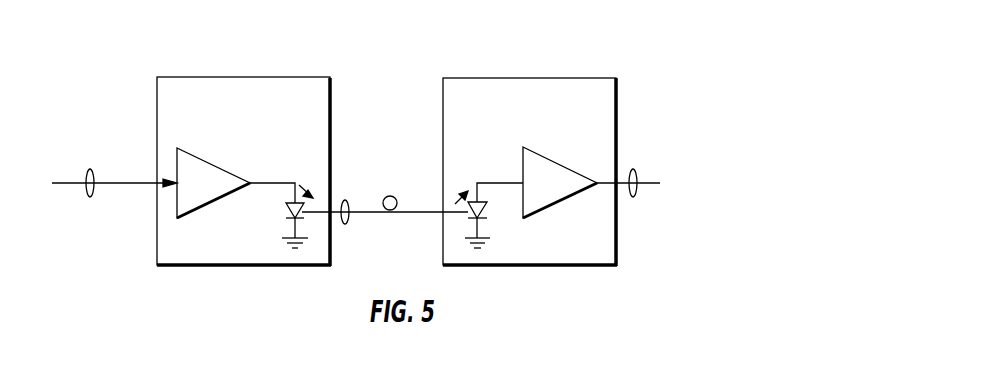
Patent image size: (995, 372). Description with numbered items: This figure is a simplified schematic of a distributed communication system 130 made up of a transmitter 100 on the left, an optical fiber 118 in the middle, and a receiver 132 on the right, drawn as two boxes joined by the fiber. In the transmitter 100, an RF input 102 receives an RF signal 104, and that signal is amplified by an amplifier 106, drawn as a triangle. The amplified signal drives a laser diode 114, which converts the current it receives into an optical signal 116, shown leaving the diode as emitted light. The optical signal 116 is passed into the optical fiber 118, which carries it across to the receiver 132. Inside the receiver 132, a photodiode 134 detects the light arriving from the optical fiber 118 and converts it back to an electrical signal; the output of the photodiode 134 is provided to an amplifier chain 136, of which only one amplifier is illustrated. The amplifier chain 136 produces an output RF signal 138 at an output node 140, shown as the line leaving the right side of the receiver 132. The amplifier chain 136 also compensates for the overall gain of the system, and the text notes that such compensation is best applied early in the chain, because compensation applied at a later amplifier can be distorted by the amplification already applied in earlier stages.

The transmitter 100 is at (285, 77).
The RF input 102 is at (128, 180).
The RF signal 104 is at (84, 178).
The amplifier 106 is at (217, 163).
The laser diode 114 is at (288, 209).
The optical signal 116 is at (347, 223).
The optical fiber 118 is at (375, 207).
The distributed communication system 130 is at (398, 73).
The receiver 132 is at (593, 78).
The photodiode 134 is at (486, 208).
The amplifier chain 136 is at (578, 173).
The output RF signal 138 is at (637, 175).
The output node 140 is at (625, 190).